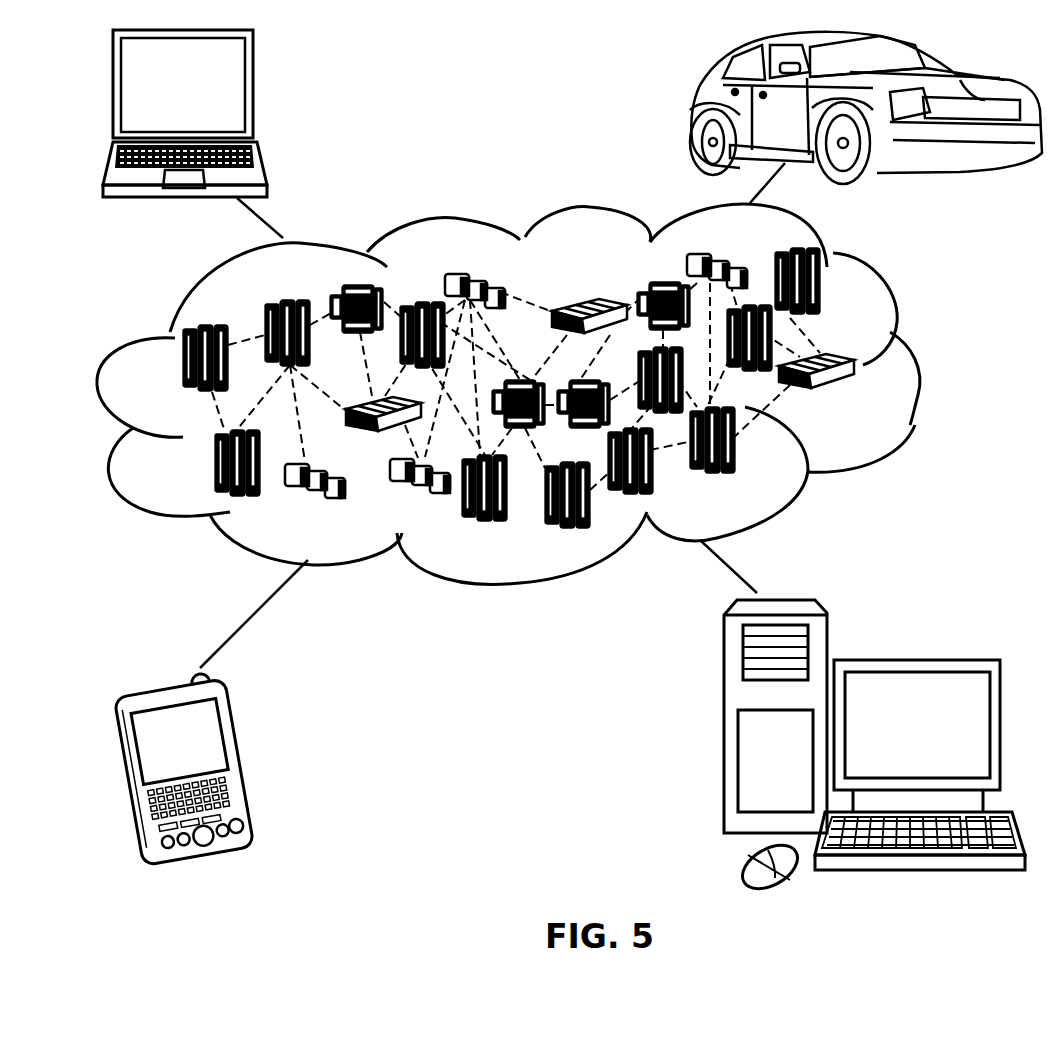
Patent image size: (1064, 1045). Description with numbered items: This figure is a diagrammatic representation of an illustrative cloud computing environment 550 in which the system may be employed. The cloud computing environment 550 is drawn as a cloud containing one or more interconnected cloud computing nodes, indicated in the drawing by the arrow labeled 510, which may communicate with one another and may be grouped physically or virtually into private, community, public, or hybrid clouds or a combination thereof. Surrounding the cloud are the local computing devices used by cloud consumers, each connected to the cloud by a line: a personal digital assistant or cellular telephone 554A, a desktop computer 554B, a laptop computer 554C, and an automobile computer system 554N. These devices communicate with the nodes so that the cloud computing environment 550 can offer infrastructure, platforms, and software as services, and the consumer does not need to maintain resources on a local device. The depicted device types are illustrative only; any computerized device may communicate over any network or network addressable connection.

The distributed computing network 510 is at (581, 388).
The cloud computing environment 550 is at (917, 367).
The personal digital assistant or cellular telephone 554A is at (238, 758).
The desktop computer 554B is at (915, 660).
The laptop computer 554C is at (255, 92).
The automobile computer system 554N is at (693, 108).